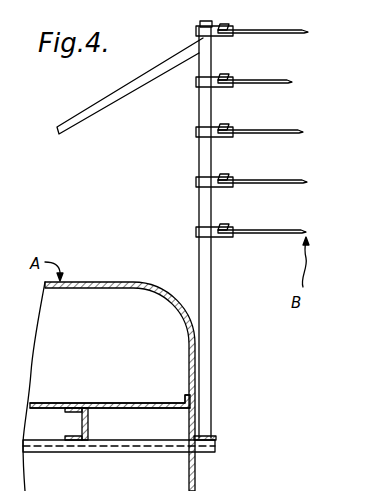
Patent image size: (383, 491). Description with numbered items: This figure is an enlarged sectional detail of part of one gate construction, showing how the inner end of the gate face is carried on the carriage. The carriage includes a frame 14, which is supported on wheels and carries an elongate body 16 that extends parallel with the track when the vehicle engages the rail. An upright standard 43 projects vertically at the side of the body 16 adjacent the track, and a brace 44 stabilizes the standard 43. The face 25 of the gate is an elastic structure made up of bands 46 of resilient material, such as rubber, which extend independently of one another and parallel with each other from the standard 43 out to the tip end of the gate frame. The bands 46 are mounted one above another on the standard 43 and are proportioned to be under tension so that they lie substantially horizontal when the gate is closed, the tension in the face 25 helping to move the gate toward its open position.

The frame 14 is at (89, 428).
The elongate body 16 is at (113, 282).
The face 25 is at (292, 27).
The standard 43 is at (197, 216).
The braces 44 is at (92, 116).
The bands 46 is at (265, 34).